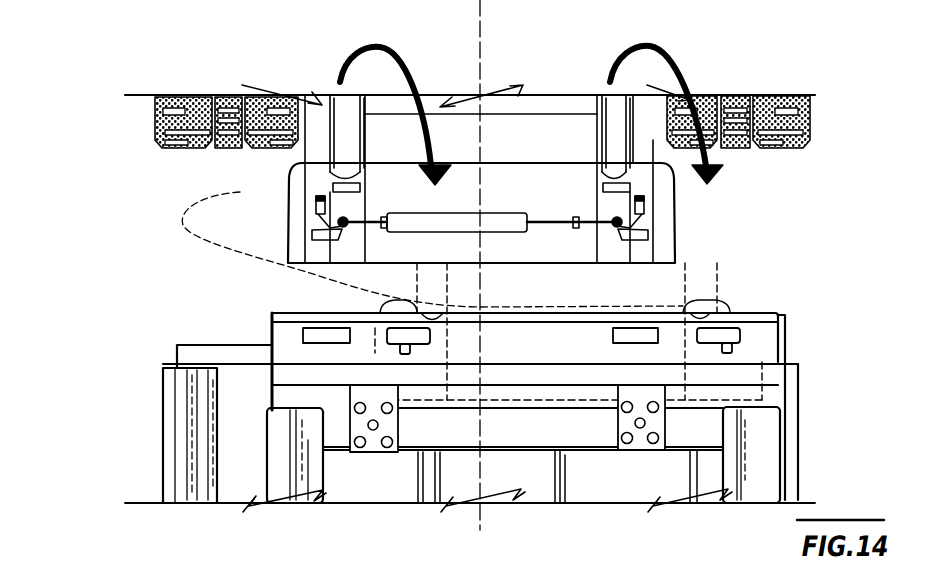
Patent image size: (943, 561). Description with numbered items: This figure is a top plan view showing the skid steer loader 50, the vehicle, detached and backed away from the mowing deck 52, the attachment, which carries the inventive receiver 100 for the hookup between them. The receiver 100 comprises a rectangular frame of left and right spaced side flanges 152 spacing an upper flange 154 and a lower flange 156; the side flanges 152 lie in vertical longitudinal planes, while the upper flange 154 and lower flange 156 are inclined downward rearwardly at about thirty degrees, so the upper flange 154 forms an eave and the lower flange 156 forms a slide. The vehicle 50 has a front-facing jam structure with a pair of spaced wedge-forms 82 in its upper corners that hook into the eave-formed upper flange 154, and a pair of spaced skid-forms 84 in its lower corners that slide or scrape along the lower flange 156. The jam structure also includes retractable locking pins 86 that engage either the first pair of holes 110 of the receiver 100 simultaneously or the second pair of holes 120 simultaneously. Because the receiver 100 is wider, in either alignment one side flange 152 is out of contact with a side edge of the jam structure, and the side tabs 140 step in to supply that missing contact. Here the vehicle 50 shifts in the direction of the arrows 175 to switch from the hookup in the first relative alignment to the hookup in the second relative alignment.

The skid steer loader 50 is at (594, 84).
The mowing deck 52 is at (158, 385).
The wedge-forms 82 is at (318, 251).
The skid-forms 84 is at (537, 181).
The retractable locking pins 86 is at (308, 188).
The receiver 100 is at (706, 450).
The first pair of holes 110 is at (315, 329).
The second pair of holes 120 is at (386, 328).
The side tabs 140 is at (380, 437).
The left and right side flanges 152 is at (272, 355).
The upper flange 154 is at (748, 395).
The lower flange 156 is at (330, 317).
The arrows 175 is at (396, 45).